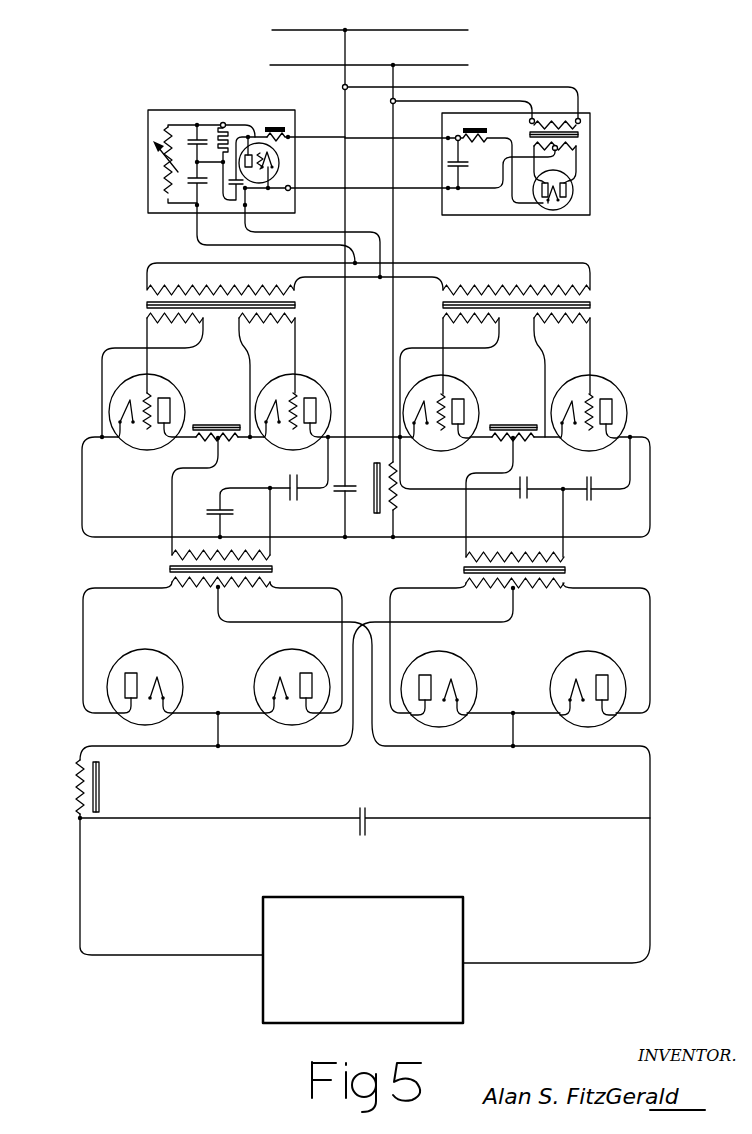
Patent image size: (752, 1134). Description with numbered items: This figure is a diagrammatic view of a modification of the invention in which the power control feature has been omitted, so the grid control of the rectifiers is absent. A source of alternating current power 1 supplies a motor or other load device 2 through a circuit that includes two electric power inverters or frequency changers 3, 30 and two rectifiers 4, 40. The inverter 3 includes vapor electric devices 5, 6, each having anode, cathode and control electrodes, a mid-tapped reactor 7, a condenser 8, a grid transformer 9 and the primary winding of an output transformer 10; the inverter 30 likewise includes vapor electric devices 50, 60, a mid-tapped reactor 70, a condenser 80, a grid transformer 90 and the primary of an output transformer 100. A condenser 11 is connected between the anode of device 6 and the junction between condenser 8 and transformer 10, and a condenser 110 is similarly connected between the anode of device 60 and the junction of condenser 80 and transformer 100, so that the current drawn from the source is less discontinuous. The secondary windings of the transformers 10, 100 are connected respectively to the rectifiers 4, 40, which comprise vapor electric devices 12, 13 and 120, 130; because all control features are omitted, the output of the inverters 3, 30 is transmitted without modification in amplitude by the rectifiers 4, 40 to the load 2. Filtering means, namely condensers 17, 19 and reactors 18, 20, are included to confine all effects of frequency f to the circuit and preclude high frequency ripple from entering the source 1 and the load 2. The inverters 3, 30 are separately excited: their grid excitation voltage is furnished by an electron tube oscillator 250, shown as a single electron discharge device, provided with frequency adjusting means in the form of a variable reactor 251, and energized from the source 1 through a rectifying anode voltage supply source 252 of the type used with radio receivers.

The source of alternating current power 1 is at (365, 282).
The load device 2 is at (363, 960).
The inverter 3 is at (360, 409).
The grid controlled rectifier 4 is at (351, 725).
The vapor electric device 5 is at (147, 401).
The vapor electric device 6 is at (293, 401).
The mid-tapped reactor 7 is at (206, 480).
The condenser 8 is at (248, 512).
The grid transformer 9 is at (295, 328).
The output transformer 10 is at (366, 725).
The condenser 11 is at (305, 479).
The vapor electric device 12 is at (154, 682).
The vapor electric device 13 is at (290, 682).
The condenser 17 is at (365, 807).
The reactor 18 is at (169, 857).
The condenser 19 is at (335, 512).
The reactor 20 is at (400, 500).
The inverter 30 is at (500, 410).
The grid controlled rectifier 40 is at (385, 656).
The vapor electric device 50 is at (441, 402).
The vapor electric device 60 is at (589, 402).
The mid-tapped reactor 70 is at (501, 480).
The condenser 80 is at (518, 495).
The grid transformer 90 is at (486, 328).
The output transformer 100 is at (365, 656).
The condenser 110 is at (585, 501).
The vapor electric device 120 is at (452, 686).
The vapor electric device 130 is at (578, 686).
The electron tube oscillator 250 is at (247, 182).
The variable reactor 251 is at (145, 160).
The rectifying anode voltage supply source 252 is at (628, 103).